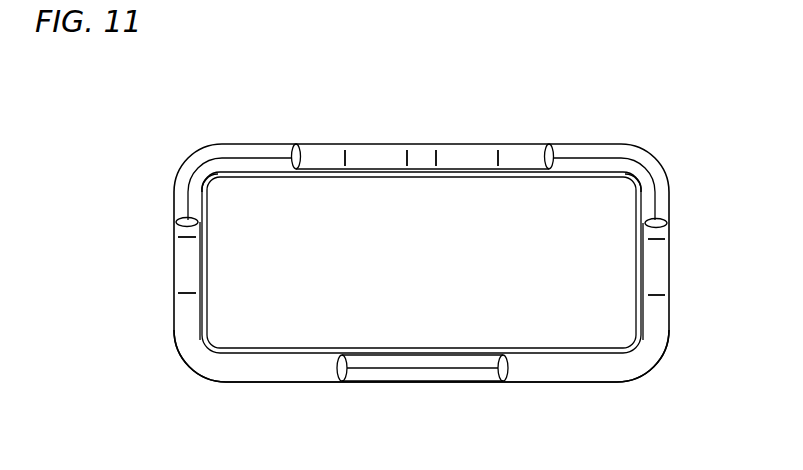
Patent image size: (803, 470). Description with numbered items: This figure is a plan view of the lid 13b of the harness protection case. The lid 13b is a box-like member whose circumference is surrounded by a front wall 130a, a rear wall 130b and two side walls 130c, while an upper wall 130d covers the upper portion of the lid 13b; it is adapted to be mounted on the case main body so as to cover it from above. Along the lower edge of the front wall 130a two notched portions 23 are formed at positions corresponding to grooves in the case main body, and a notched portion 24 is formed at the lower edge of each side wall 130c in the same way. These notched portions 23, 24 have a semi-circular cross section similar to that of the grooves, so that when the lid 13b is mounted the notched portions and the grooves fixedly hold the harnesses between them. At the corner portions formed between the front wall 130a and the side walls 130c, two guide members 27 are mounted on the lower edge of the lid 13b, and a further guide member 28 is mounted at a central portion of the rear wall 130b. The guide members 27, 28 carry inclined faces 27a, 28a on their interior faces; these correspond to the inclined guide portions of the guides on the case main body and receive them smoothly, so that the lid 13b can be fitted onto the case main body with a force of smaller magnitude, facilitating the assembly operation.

The lid 13b is at (200, 139).
The guide member 27 is at (263, 143).
The inclined face 27a is at (203, 182).
The notched portion 23 is at (377, 158).
The notched portion 24 is at (183, 262).
The guide member 28 is at (442, 376).
The inclined face 28a is at (472, 360).
The front wall 130a is at (423, 158).
The rear wall 130b is at (548, 373).
The side wall 130c is at (188, 323).
The upper wall 130d is at (447, 271).